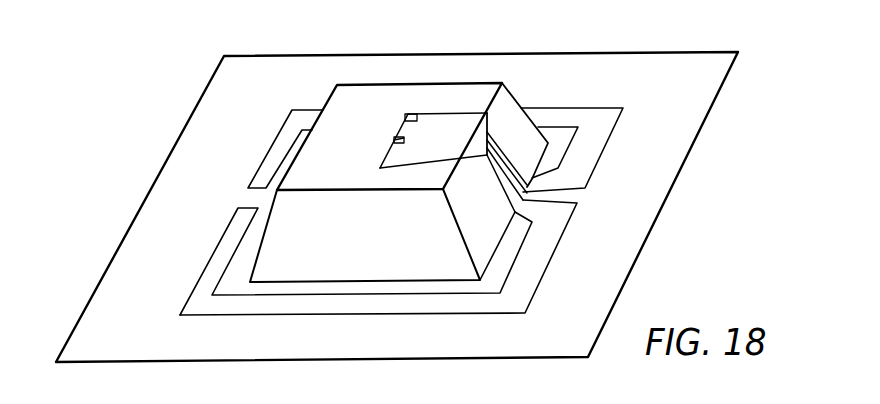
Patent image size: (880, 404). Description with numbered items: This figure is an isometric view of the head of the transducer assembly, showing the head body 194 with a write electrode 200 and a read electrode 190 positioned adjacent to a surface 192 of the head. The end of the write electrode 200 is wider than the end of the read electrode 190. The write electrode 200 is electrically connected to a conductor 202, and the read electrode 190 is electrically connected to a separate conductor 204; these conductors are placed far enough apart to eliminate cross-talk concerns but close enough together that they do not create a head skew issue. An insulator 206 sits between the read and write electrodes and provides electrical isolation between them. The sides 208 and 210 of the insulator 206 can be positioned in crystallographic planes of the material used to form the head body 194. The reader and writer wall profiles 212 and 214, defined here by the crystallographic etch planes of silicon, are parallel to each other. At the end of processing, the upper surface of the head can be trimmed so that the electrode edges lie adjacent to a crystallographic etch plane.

The read electrode 190 is at (398, 141).
The surface of the head 192 is at (401, 91).
The head body 194 is at (284, 230).
The write electrode 200 is at (414, 110).
The conductor 202 is at (587, 157).
The conductor 204 is at (556, 227).
The insulator 206 is at (457, 125).
The side of the insulator 208 is at (488, 124).
The side of the insulator 210 is at (463, 168).
The reader wall profile 212 is at (388, 142).
The writer wall profile 214 is at (408, 117).